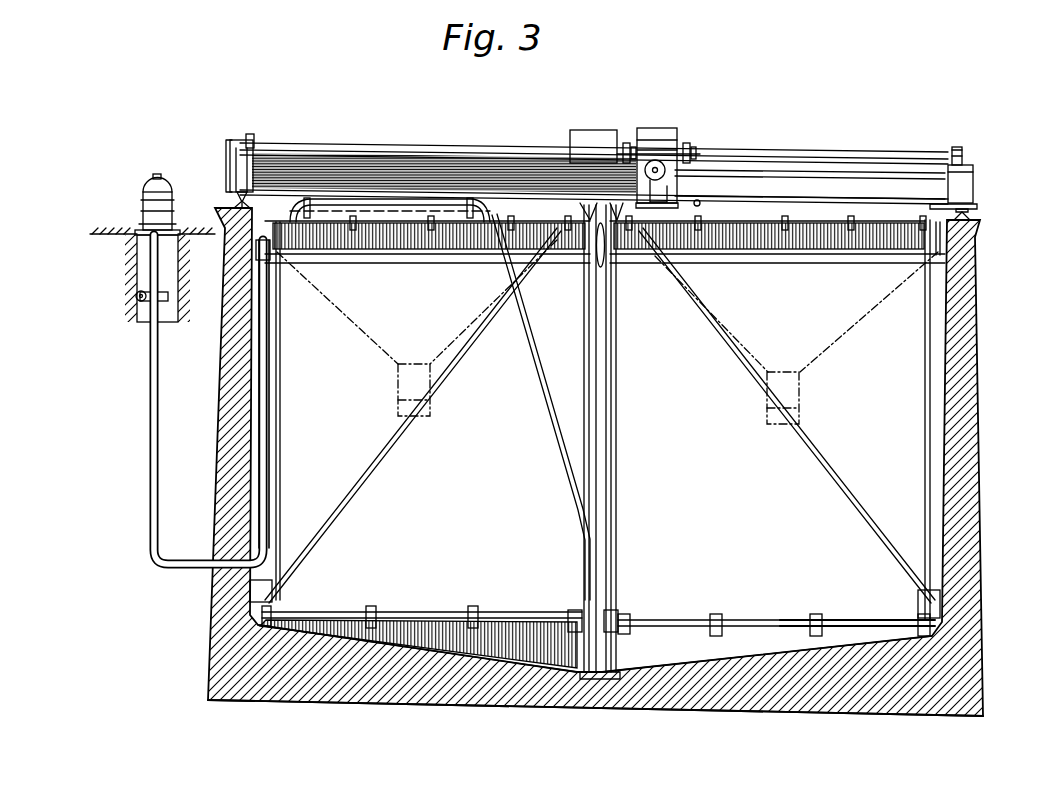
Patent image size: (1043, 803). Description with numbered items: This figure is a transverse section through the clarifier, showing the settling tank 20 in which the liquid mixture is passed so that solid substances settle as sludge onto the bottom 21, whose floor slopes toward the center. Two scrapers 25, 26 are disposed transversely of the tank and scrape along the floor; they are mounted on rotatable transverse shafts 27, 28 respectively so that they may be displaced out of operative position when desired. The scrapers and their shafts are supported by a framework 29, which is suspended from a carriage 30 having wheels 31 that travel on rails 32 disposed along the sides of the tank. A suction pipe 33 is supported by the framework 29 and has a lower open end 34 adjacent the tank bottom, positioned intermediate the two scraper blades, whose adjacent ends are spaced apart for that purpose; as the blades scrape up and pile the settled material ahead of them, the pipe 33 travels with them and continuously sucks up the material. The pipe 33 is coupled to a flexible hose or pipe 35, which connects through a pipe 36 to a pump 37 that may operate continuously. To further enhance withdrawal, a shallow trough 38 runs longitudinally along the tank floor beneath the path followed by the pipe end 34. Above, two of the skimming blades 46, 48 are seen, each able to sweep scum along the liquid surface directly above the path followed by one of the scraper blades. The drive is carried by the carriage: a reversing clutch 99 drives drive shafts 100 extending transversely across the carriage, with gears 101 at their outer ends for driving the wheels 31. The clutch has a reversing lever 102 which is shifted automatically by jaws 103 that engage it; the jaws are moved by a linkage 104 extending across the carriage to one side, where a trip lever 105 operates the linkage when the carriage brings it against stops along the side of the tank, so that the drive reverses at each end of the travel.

The settling tank 20 is at (966, 483).
The bottom 21 is at (660, 672).
The scraper 25 is at (490, 633).
The scraper 26 is at (675, 621).
The rotatable transverse shaft 27 is at (420, 611).
The rotatable transverse shaft 28 is at (748, 621).
The framework 29 is at (396, 436).
The carriage 30 is at (963, 208).
The wheels 31 is at (262, 194).
The rails 32 is at (236, 206).
The suction pipe 33 is at (568, 469).
The open end 34 is at (611, 676).
The flexible hose or pipe 35 is at (271, 421).
The pipe 36 is at (150, 446).
The pump 37 is at (142, 206).
The shallow trough 38 is at (594, 682).
The blade 46 is at (392, 250).
The blade 48 is at (792, 250).
The reversing clutch 99 is at (660, 130).
The drive shafts 100 is at (392, 144).
The gears 101 is at (250, 134).
The reversing lever 102 is at (699, 201).
The jaws 103 is at (664, 207).
The linkage 104 is at (798, 199).
The trip lever 105 is at (955, 203).